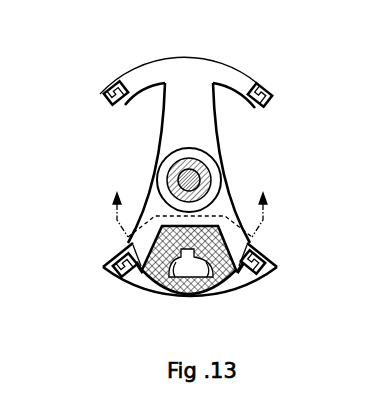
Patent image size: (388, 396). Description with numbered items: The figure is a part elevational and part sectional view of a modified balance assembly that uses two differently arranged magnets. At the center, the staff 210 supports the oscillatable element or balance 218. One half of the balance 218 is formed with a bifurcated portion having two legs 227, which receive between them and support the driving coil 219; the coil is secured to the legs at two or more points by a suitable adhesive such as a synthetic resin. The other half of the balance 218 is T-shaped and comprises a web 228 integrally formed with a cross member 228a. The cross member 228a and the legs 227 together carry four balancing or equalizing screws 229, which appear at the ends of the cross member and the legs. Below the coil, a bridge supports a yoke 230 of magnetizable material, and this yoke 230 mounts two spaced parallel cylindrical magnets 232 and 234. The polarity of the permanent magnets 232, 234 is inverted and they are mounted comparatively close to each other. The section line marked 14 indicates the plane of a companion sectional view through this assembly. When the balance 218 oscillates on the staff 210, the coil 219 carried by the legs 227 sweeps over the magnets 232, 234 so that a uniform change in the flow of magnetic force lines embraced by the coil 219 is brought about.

The cross member 228a is at (229, 72).
The web 228 is at (204, 126).
The balancing or equalizing screws 229 is at (106, 92).
The balance 218 is at (149, 174).
The staff 210 is at (201, 181).
The section line 14- 14 is at (192, 215).
The legs 227 is at (130, 252).
The yoke 230 is at (127, 278).
The driving coil 219 is at (217, 290).
The cylindrical magnet 232 is at (168, 289).
The cylindrical magnet 234 is at (199, 292).